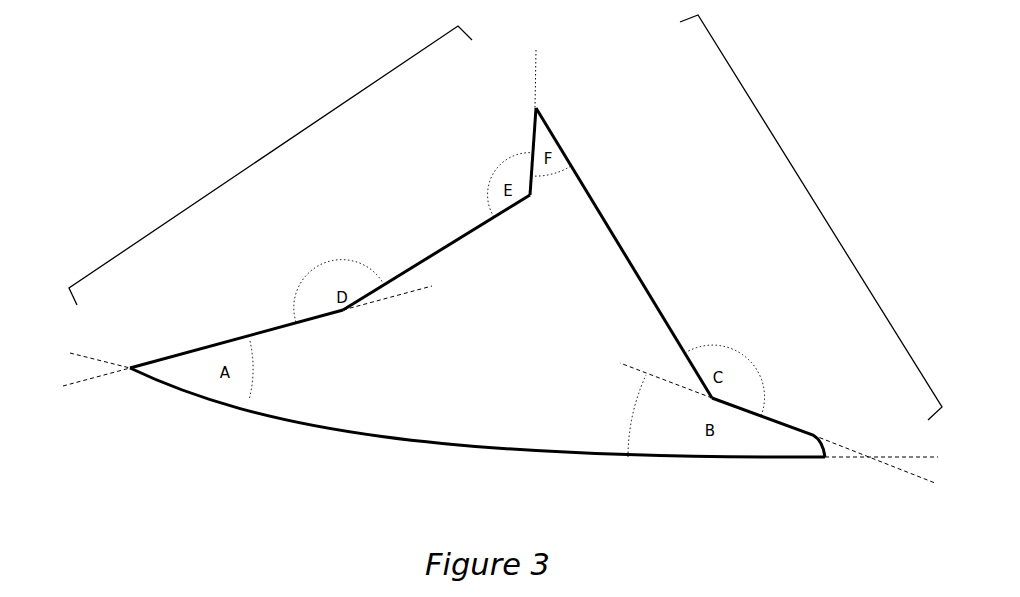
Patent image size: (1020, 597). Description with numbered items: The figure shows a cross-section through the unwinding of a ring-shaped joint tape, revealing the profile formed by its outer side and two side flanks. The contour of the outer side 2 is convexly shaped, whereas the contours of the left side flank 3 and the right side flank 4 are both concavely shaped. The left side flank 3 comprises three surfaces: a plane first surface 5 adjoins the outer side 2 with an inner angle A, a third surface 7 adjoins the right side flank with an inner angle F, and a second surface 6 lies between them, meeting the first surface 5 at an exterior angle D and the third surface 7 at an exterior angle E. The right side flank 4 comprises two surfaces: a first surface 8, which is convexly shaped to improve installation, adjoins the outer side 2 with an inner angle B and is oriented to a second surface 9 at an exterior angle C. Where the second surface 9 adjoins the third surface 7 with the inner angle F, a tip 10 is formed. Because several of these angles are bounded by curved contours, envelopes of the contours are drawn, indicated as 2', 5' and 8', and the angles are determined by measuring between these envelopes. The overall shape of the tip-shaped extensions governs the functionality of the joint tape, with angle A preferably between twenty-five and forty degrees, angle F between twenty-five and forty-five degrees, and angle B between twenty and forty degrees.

The outer side 2 is at (477, 439).
The envelope of the outer side 2' is at (505, 402).
The left side flank 3 is at (262, 157).
The right side flank 4 is at (820, 211).
The first surface 5 is at (236, 308).
The envelope of the first surface 5' is at (88, 383).
The second surface 6 is at (408, 253).
The third surface 7 is at (512, 156).
The first surface 8 is at (768, 399).
The envelope of the first surface 8' is at (886, 466).
The second surface 9 is at (655, 262).
The tip 10 is at (541, 66).